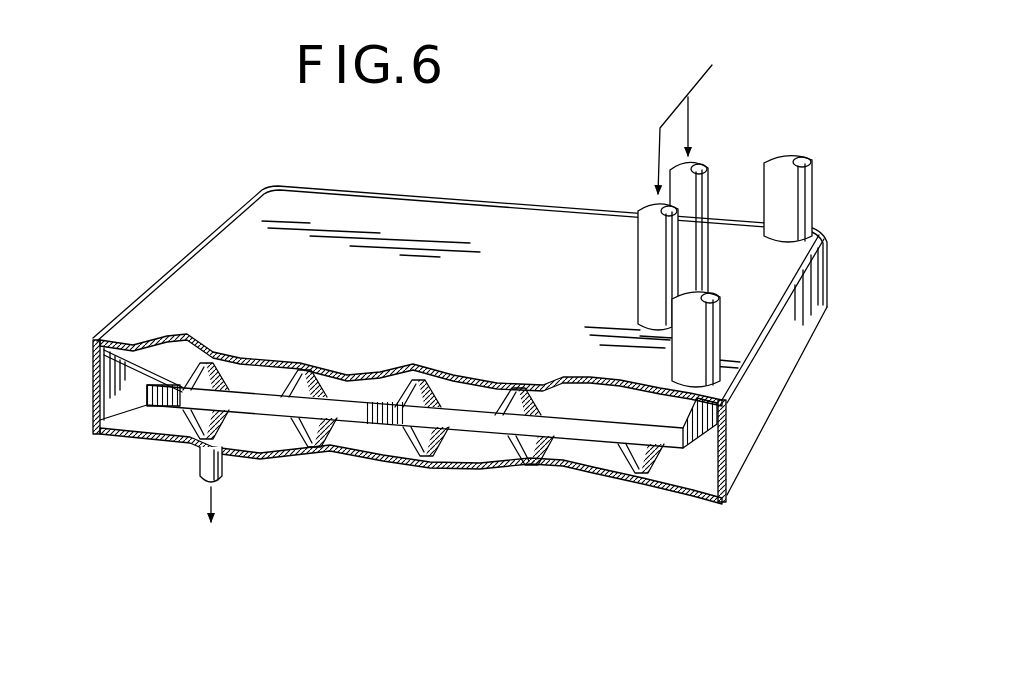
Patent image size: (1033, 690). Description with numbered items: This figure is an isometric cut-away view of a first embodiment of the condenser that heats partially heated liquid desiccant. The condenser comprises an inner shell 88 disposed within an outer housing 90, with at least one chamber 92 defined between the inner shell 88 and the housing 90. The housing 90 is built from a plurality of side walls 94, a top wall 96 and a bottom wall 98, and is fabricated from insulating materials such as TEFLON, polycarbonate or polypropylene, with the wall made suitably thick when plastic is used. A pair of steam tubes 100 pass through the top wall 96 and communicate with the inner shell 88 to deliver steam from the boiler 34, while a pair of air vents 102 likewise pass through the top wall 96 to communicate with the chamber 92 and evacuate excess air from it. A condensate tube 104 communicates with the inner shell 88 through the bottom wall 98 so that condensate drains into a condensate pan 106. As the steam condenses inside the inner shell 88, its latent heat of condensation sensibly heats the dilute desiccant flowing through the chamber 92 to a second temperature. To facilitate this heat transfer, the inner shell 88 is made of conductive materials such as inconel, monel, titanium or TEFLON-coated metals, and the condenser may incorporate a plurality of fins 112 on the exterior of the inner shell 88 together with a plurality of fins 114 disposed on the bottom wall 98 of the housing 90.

The boiler 34 is at (720, 100).
The inner shell 88 is at (662, 473).
The outer housing 90 is at (232, 255).
The chamber 92 is at (257, 377).
The side walls 94 is at (90, 385).
The top wall 96 is at (463, 215).
The bottom wall 98 is at (388, 457).
The steam tubes 100 is at (653, 256).
The air vents 102 is at (763, 443).
The condensate tube 104 is at (207, 463).
The condensate pan 106 is at (201, 523).
The fins 112 is at (497, 380).
The fins 114 is at (592, 456).